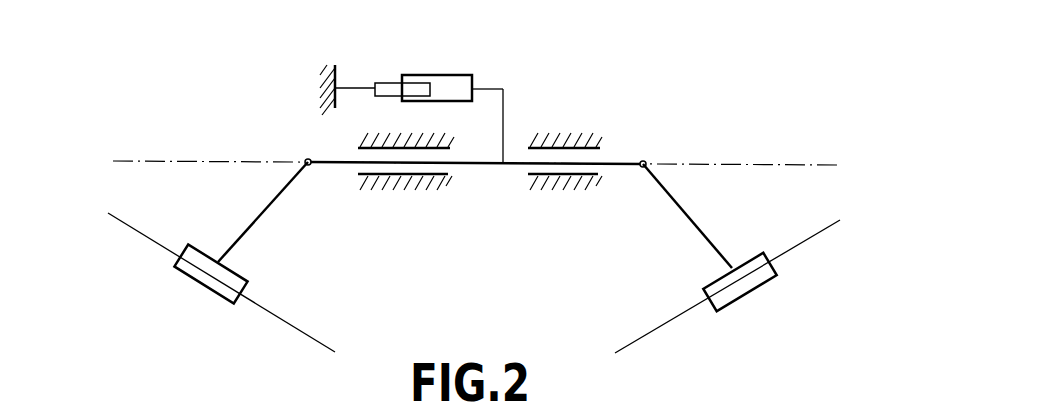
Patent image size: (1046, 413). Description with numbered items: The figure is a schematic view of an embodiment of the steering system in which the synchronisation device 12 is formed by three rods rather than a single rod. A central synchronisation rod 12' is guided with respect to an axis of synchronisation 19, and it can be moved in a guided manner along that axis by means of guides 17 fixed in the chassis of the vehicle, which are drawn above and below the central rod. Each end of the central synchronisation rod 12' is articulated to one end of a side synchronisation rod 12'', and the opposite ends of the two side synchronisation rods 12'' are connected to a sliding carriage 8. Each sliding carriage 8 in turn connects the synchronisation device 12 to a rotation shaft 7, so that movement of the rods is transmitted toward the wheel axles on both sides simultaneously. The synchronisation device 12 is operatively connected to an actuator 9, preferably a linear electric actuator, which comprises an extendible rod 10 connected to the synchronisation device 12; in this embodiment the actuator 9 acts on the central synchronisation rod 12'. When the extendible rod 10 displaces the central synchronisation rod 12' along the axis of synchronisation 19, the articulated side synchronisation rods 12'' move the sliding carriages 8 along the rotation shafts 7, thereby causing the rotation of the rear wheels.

The rotation shaft 7 is at (140, 232).
The sliding carriage 8 is at (200, 277).
The actuator 9 is at (386, 74).
The extendible rod 10 is at (452, 75).
The synchronisation device 12 is at (475, 212).
The central synchronisation rod 12' is at (487, 116).
The side synchronisation rod 12'' is at (475, 215).
The guide 17 is at (392, 178).
The axis of synchronisation 19 is at (753, 164).